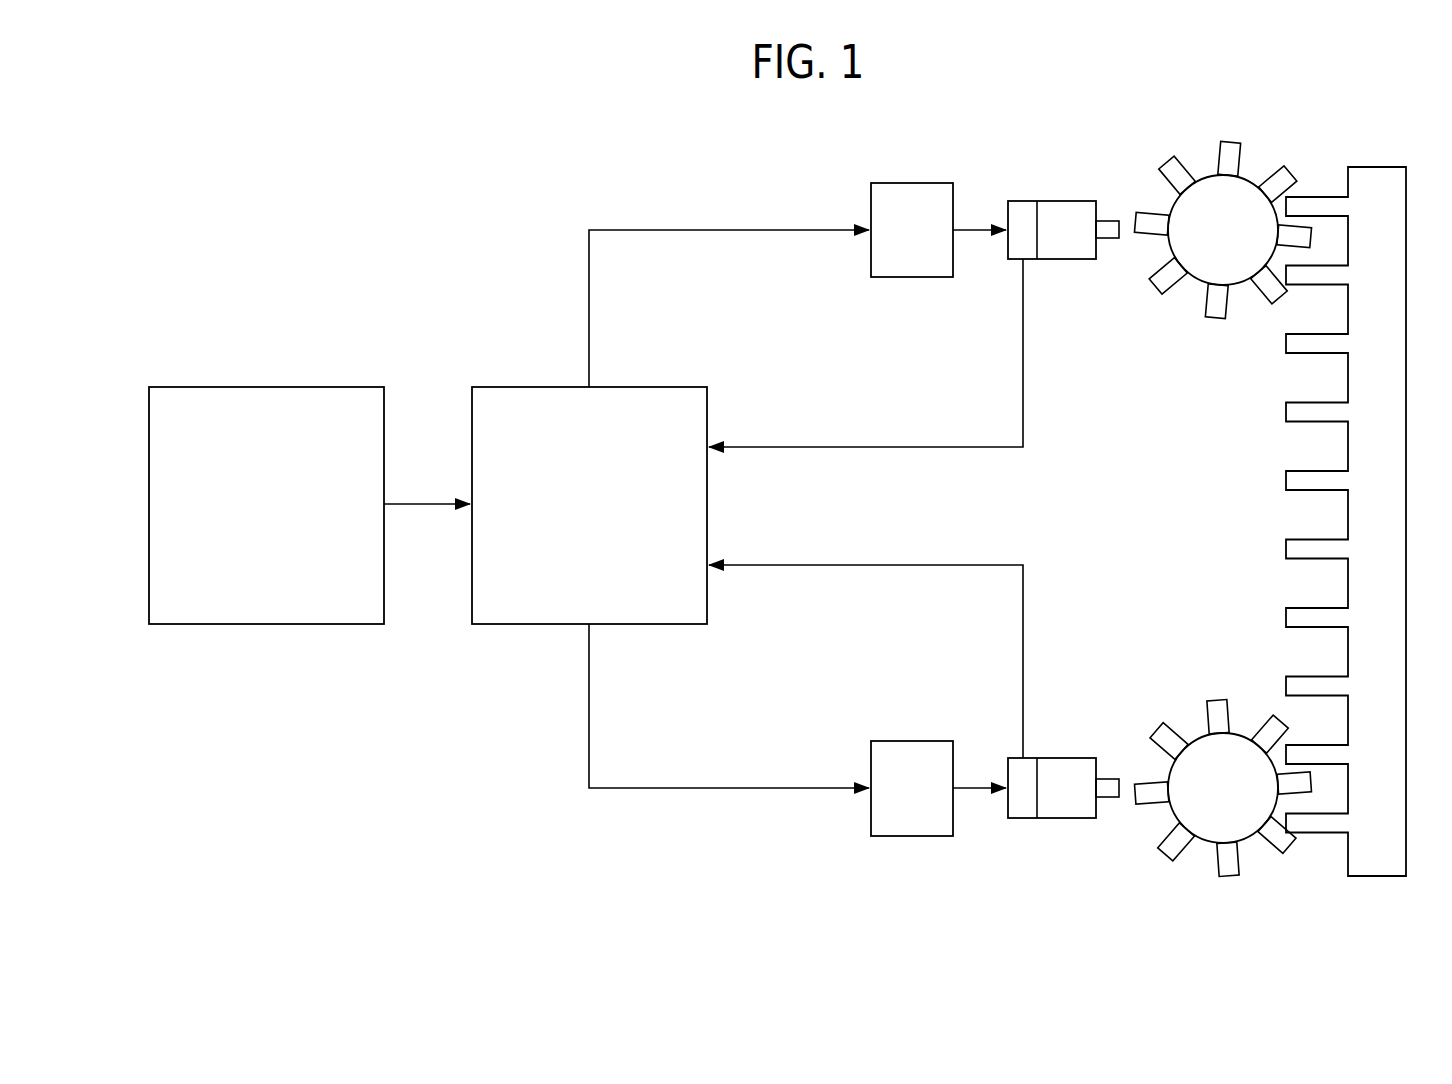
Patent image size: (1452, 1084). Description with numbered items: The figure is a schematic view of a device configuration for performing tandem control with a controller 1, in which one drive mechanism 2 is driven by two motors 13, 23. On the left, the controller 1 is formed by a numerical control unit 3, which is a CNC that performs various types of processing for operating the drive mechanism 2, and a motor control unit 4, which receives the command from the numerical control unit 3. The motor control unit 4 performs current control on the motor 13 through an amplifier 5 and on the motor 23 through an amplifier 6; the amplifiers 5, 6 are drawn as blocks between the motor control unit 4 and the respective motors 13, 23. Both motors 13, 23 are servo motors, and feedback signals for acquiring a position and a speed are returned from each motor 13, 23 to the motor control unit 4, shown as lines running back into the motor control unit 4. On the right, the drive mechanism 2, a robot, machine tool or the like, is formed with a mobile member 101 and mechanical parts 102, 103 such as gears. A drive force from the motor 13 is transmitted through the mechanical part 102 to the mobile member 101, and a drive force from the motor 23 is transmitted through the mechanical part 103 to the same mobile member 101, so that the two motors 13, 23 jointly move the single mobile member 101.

The controller 1 is at (310, 302).
The drive mechanism 2 is at (1281, 899).
The numerical control unit 3 is at (356, 387).
The motor control unit 4 is at (679, 387).
The amplifier 5 is at (913, 183).
The amplifier 6 is at (913, 741).
The motor 13 is at (1074, 201).
The motor 23 is at (1074, 758).
The mobile member 101 is at (1389, 167).
The mechanical part 102 is at (1244, 176).
The mechanical part 103 is at (1244, 734).